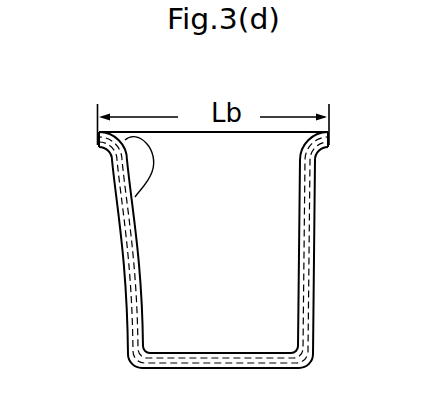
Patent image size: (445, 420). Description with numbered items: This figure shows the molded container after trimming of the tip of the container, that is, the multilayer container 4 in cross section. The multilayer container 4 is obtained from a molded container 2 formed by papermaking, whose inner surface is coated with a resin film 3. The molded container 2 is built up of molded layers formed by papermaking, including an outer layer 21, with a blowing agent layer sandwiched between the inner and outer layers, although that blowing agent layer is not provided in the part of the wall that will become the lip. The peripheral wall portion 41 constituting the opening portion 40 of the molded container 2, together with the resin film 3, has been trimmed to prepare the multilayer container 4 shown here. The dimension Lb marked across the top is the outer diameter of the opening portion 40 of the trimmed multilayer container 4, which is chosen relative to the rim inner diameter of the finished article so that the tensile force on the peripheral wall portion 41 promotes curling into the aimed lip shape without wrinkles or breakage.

The molded container 2 is at (322, 284).
The resin film 3 is at (300, 240).
The multilayer container 4 is at (239, 91).
The outer layer 21 is at (322, 147).
The opening portion 40 is at (121, 208).
The peripheral wall portion 41 is at (104, 148).